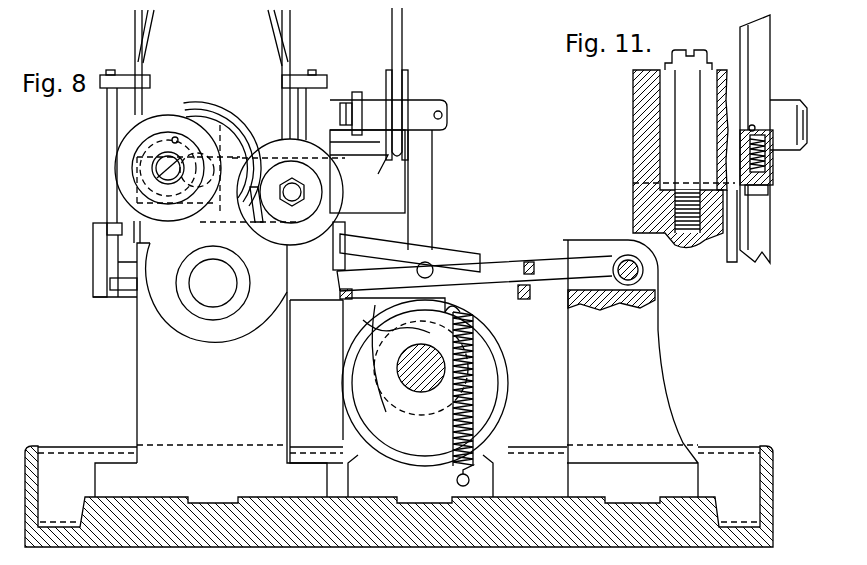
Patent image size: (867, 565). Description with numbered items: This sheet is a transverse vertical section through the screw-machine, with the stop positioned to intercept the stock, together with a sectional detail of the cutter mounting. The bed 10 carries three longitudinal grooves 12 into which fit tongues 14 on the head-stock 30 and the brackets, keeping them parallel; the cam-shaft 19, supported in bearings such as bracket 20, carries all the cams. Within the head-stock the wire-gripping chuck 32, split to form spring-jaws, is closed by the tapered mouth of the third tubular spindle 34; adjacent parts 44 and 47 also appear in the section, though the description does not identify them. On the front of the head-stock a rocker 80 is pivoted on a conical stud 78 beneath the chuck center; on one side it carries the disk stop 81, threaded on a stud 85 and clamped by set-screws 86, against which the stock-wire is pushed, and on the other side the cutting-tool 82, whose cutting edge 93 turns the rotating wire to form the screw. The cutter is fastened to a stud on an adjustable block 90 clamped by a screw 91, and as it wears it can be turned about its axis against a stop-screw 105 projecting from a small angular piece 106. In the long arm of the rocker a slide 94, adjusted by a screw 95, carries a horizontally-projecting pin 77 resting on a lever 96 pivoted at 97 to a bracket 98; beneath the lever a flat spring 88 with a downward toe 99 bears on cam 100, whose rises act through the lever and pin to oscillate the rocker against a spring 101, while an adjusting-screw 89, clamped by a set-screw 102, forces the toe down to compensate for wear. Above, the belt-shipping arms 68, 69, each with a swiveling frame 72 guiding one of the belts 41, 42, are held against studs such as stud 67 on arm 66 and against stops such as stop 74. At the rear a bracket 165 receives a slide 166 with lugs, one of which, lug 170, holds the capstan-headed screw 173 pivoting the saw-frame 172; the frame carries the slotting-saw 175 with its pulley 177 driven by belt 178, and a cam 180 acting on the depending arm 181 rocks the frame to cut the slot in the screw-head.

In FIG. 8, the bed 10 is at (399, 496).
In FIG. 8, the longitudinal parallel grooves 12 is at (656, 499).
In FIG. 8, the tongues 14 is at (620, 497).
In FIG. 8, the cam-shaft 19 is at (421, 368).
In FIG. 8, the bracket 20 is at (450, 396).
In FIG. 8, the head-stock 30 is at (211, 370).
In FIG. 8, the wire-gripping chuck 32 is at (233, 160).
In FIG. 8, the third tubular spindle 34 is at (191, 236).
In FIG. 8, the belt 41 is at (135, 46).
In FIG. 8, the belt 42 is at (152, 40).
In FIG. 8, the gear 44 is at (214, 115).
In FIG. 8, the bracket 47 is at (300, 366).
In FIG. 8, the upwardly-extending arm 66 is at (93, 258).
In FIG. 8, the stud 67 is at (112, 223).
In FIG. 8, the belt-shipping arm 68 is at (310, 107).
In FIG. 8, the belt-shipping arm 69 is at (107, 118).
In FIG. 8, the swiveling frame 72 is at (150, 80).
In FIG. 8, the stop 74 is at (118, 291).
In FIG. 8, the horizontally-projecting pin 77 is at (432, 265).
In FIG. 8, the conical stud 78 is at (213, 283).
In FIG. 8, the rocker 80 is at (499, 216).
In FIG. 11, the rocker 80 is at (728, 252).
In FIG. 8, the disk stop 81 is at (158, 122).
In FIG. 8, the cutting-tool 82 is at (290, 192).
In FIG. 11, the cutting-tool 82 is at (766, 48).
In FIG. 8, the threaded stud 85 is at (152, 168).
In FIG. 8, the set-screws 86 is at (176, 137).
In FIG. 8, the flat spring 88 is at (455, 282).
In FIG. 8, the adjusting-screw 89 is at (356, 266).
In FIG. 11, the adjustable block 90 is at (633, 150).
In FIG. 11, the screw 91 is at (693, 50).
In FIG. 8, the cutting edge 93 is at (264, 156).
In FIG. 11, the cutting edge 93 is at (755, 127).
In FIG. 8, the slide 94 is at (508, 243).
In FIG. 8, the screw 95 is at (528, 300).
In FIG. 8, the lever 96 is at (568, 262).
In FIG. 8, the pivot 97 is at (644, 273).
In FIG. 8, the bracket 98 is at (632, 368).
In FIG. 8, the toe 99 is at (398, 322).
In FIG. 8, the cam 100 is at (420, 372).
In FIG. 8, the spring 101 is at (482, 435).
In FIG. 8, the set-screw 102 is at (346, 298).
In FIG. 8, the screw 105 is at (260, 224).
In FIG. 11, the screw 105 is at (768, 192).
In FIG. 8, the angular piece 106 is at (216, 222).
In FIG. 11, the angular piece 106 is at (773, 170).
In FIG. 8, the bracket 165 is at (367, 171).
In FIG. 8, the slide 166 is at (359, 164).
In FIG. 8, the lug 170 is at (347, 116).
In FIG. 8, the saw-frame 172 is at (372, 108).
In FIG. 8, the capstan-headed screw 173 is at (448, 111).
In FIG. 8, the slotting-saw 175 is at (372, 95).
In FIG. 8, the pulley 177 is at (409, 76).
In FIG. 8, the belt 178 is at (404, 22).
In FIG. 8, the cam 180 is at (508, 373).
In FIG. 8, the arm 181 is at (432, 150).